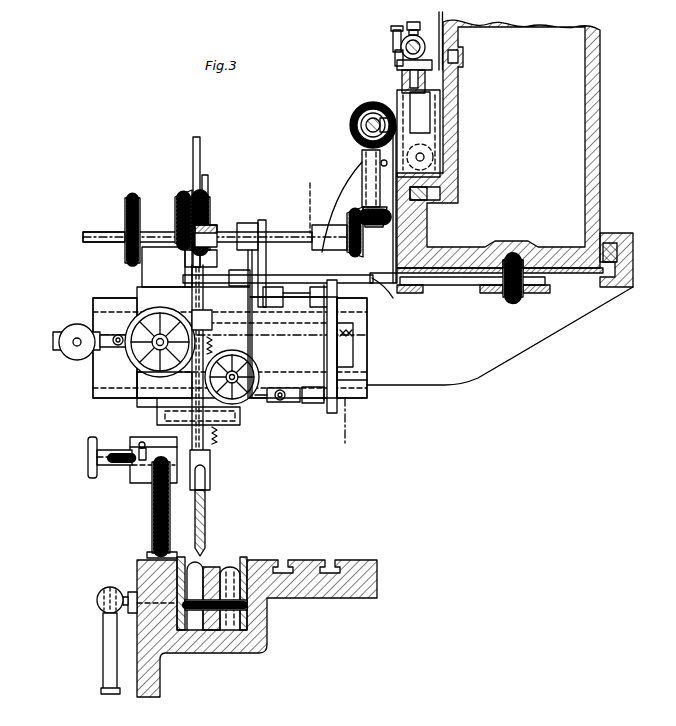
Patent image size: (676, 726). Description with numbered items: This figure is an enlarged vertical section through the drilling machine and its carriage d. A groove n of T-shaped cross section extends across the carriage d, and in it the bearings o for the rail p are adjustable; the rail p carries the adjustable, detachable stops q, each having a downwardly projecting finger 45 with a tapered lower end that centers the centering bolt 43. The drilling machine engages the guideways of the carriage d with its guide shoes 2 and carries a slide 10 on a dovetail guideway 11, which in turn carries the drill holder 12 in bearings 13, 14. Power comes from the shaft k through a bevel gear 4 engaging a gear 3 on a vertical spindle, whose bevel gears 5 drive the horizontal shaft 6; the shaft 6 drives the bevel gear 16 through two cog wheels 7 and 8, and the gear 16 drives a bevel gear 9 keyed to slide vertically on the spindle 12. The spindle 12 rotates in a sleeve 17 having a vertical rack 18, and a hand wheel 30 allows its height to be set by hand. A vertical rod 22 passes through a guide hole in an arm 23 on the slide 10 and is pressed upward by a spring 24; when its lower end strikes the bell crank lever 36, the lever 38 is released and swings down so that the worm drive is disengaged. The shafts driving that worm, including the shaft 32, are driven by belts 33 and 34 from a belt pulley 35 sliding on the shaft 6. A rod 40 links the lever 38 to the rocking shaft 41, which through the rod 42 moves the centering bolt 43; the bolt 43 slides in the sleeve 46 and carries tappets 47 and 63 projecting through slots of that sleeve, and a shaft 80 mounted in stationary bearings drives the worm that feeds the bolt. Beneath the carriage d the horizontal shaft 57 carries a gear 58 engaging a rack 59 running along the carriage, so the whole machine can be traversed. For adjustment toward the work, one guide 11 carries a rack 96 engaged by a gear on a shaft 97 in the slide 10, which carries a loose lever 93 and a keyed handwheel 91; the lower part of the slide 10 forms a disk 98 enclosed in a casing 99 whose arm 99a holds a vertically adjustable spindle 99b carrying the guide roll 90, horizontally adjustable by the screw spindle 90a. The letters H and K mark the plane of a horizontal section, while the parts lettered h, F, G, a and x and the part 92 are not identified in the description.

The carriage d is at (452, 123).
The groove n is at (463, 53).
The guide shoes 2 is at (437, 181).
The bearings o is at (440, 40).
The stops q is at (393, 39).
The rail p is at (395, 56).
The tappet 63 is at (397, 83).
The finger 45 is at (402, 74).
The centering bolt 43 is at (457, 82).
The tappet 47 is at (415, 104).
The sleeve 46 is at (430, 132).
The shaft 80 is at (423, 153).
The horizontal shaft 57 is at (455, 285).
The gear 58 is at (513, 297).
The rack 59 is at (512, 261).
The bracket h is at (625, 236).
The bevel gear 4 is at (357, 108).
The shaft k is at (352, 128).
The gear 3 is at (360, 156).
The bevel gears 5 is at (362, 231).
The rod 42 is at (378, 272).
The horizontal shaft 6 is at (302, 229).
The section line F is at (303, 197).
The cog wheel 7 is at (133, 198).
The cog wheel 8 is at (125, 258).
The bevel gear 16 is at (182, 192).
The vertical rod 22 is at (197, 137).
The drill holder 12 is at (205, 175).
The spring 24 is at (207, 200).
The bevel gear 9 is at (212, 225).
The bearing 13 is at (217, 258).
The arm 23 is at (167, 267).
The belt pulley 35 is at (253, 223).
The belt 34 is at (266, 263).
The rocking shaft 41 is at (318, 277).
The slide 10 is at (210, 342).
The lever 93 is at (105, 348).
The section line H is at (53, 334).
The collar 92 is at (114, 337).
The handwheel 91 is at (137, 312).
The bearing 14 is at (192, 398).
The rack 18 is at (215, 348).
The hand wheel 30 is at (240, 403).
The rod 40 is at (252, 340).
The lever 38 is at (283, 387).
The shaft 32 is at (317, 403).
The belt 33 is at (334, 347).
The dovetail guideway 11 is at (367, 318).
The section line K is at (383, 337).
The rack 96 is at (350, 334).
The bell crank lever 36 is at (165, 369).
The shaft 97 is at (147, 369).
The casing 99 is at (235, 424).
The disk 98 is at (220, 436).
The axis line G is at (338, 432).
The sleeve 17 is at (207, 456).
The arm 99a is at (158, 437).
The screw spindle 90a is at (123, 466).
The spindle 99b is at (152, 523).
The roll 90 is at (148, 556).
The base a is at (377, 584).
The bushing x is at (212, 558).